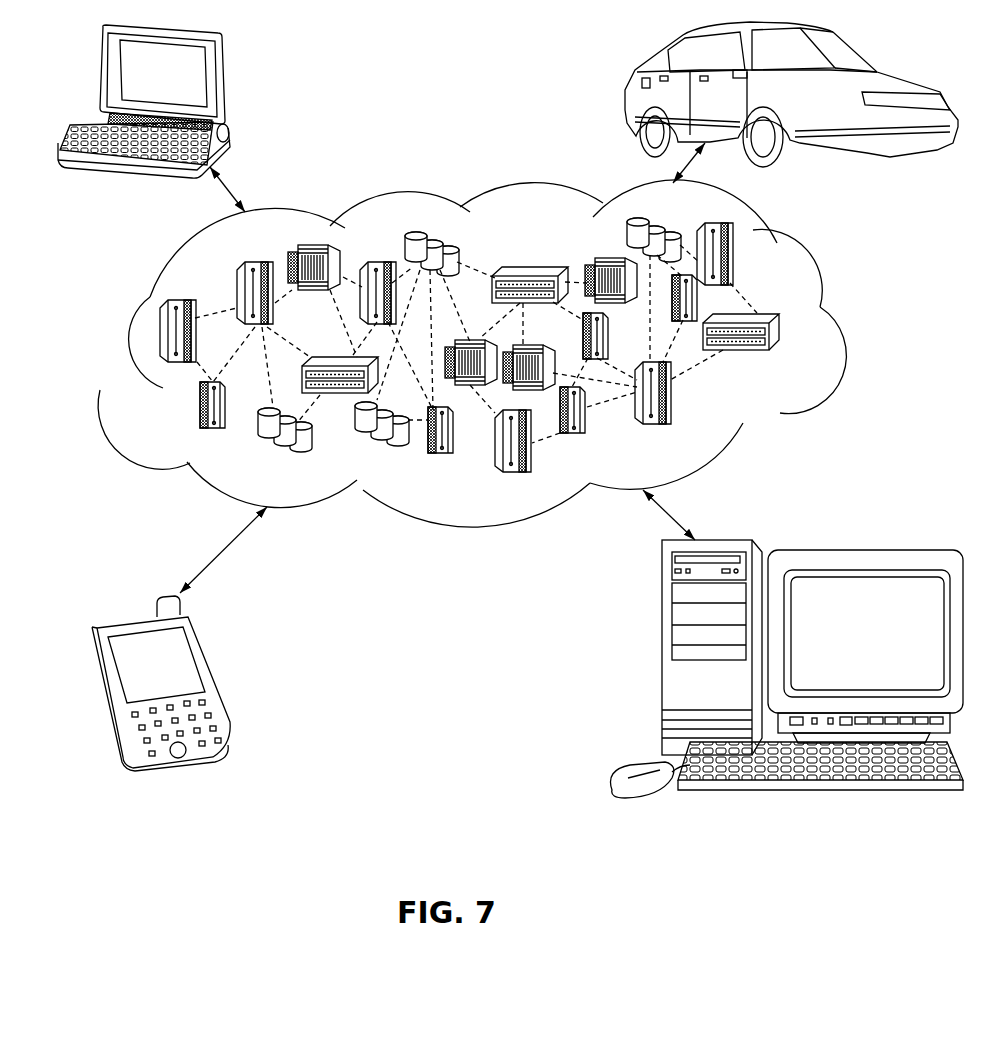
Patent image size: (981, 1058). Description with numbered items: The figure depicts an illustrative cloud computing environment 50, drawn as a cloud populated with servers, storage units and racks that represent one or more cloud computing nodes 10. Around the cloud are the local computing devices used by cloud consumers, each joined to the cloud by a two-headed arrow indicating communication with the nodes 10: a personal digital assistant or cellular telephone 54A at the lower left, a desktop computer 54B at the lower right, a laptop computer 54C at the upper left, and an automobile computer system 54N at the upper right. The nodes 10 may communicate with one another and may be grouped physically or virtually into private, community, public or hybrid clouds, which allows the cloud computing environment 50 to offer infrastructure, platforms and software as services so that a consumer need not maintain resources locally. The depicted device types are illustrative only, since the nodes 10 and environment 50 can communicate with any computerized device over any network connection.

The cloud computing node 10 is at (805, 356).
The cloud computing environment 50 is at (825, 290).
The personal digital assistant or cellular telephone 54A is at (213, 678).
The desktop computer 54B is at (660, 657).
The laptop computer 54C is at (223, 77).
The automobile computer system 54N is at (623, 85).